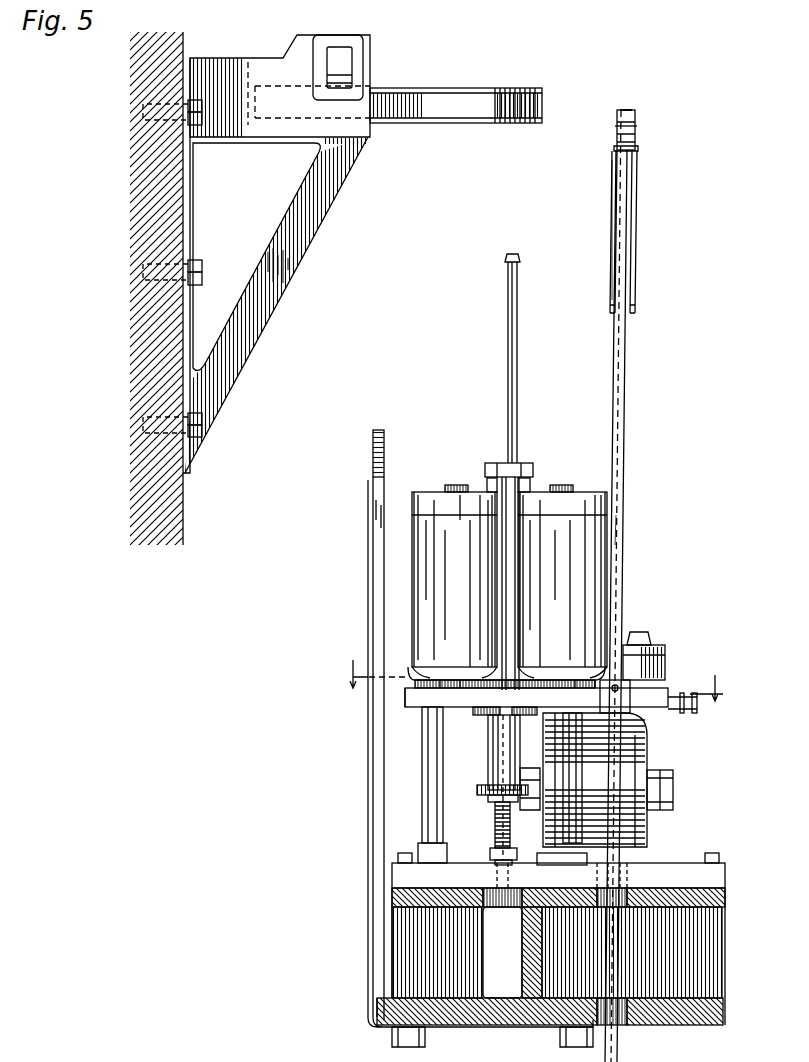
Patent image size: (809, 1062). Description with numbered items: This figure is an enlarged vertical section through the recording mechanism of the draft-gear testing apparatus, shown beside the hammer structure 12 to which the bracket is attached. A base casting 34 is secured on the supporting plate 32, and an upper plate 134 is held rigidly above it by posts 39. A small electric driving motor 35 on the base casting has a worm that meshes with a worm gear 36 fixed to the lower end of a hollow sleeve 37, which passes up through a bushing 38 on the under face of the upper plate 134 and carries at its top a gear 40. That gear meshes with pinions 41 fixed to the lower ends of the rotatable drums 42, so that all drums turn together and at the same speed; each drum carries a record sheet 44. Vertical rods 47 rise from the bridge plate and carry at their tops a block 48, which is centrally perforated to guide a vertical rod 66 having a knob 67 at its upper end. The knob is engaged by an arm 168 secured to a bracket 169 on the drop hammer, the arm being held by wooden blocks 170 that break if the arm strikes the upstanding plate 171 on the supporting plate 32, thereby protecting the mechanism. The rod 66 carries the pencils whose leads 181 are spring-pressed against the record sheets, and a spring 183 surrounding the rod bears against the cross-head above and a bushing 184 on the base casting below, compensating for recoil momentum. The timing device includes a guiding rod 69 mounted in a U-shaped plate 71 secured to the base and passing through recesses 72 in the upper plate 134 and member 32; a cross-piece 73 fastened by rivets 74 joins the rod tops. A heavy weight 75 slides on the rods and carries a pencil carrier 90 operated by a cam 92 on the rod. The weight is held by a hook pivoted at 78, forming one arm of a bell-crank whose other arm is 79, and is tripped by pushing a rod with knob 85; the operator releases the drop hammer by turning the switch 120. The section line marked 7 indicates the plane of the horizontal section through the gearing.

The wall 12 is at (160, 42).
The bracket 169 is at (318, 178).
The wooden blocks 170 is at (348, 80).
The arm 168 is at (450, 126).
The rod 66 is at (508, 288).
The knob 67 is at (521, 256).
The pivot 78 is at (637, 120).
The arm of bell-crank lever 79 is at (632, 111).
The rivets 74 is at (617, 130).
The cross-piece 73 is at (638, 146).
The block or weight 75 is at (637, 225).
The pencil carrier 90 is at (614, 178).
The guiding rod 69 is at (625, 363).
The cam 92 is at (616, 530).
The upstanding plate 171 is at (373, 440).
The record sheets 44 is at (509, 579).
The rotatable drums 42 is at (422, 490).
The block 48 is at (516, 463).
The lead or marking device 181 is at (490, 483).
The rods 47 is at (510, 632).
The gear 40 is at (520, 682).
The gears or pinions 41 is at (517, 695).
The upper plate 134 is at (413, 703).
The U-shaped plate 71 is at (628, 703).
The switch 120 is at (649, 634).
The knob 85 is at (699, 708).
The section line 7 is at (540, 683).
The posts 39 is at (423, 788).
The hollow sleeve 37 is at (490, 740).
The bushing 38 is at (493, 760).
The worm gear 36 is at (480, 797).
The spring 183 is at (495, 832).
The bushing 184 is at (491, 855).
The electric driving motor 35 is at (650, 830).
The base casting or plate 34 is at (727, 866).
The supporting plate 32 is at (726, 906).
The recesses 72 is at (630, 896).